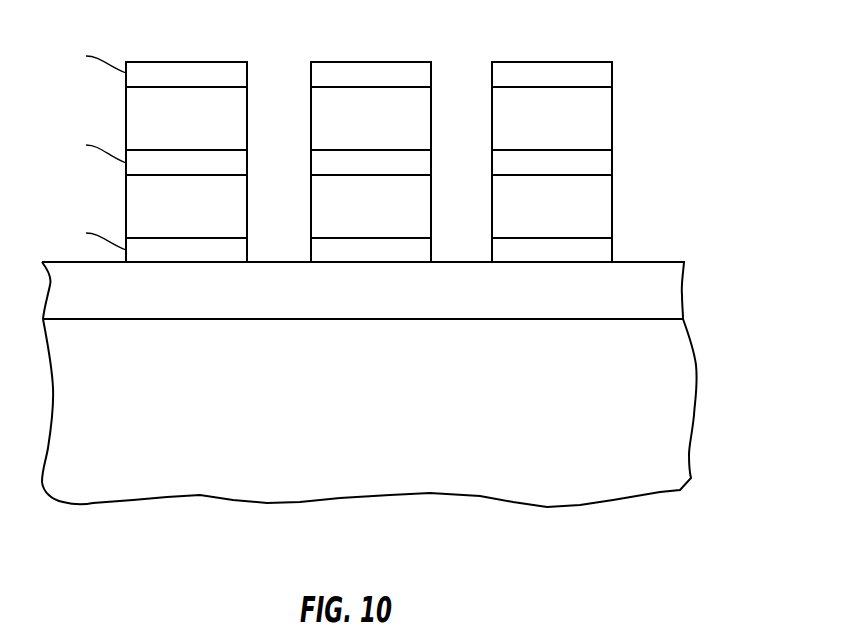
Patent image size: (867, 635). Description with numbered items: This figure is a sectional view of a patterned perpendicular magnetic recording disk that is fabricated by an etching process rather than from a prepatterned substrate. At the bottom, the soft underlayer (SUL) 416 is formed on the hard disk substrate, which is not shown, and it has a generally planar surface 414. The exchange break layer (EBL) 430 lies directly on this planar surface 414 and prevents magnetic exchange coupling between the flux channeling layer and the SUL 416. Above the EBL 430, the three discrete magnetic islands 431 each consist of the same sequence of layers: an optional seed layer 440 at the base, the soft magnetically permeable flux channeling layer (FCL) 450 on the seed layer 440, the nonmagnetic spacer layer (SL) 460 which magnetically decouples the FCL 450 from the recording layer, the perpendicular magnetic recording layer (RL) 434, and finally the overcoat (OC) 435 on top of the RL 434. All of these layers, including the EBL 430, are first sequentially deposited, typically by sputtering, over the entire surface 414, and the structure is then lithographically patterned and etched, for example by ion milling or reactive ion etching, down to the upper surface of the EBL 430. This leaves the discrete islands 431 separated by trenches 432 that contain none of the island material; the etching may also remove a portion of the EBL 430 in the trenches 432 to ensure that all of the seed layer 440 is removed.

The discrete magnetic island 431 is at (190, 56).
The trench 432 is at (263, 262).
The overcoat 435 is at (608, 78).
The perpendicular magnetic recording layer 434 is at (608, 126).
The nonmagnetic spacer layer 460 is at (608, 165).
The flux channeling layer 450 is at (608, 218).
The seed layer 440 is at (608, 251).
The exchange break layer 430 is at (663, 297).
The planar surface 414 is at (248, 318).
The soft underlayer 416 is at (673, 446).